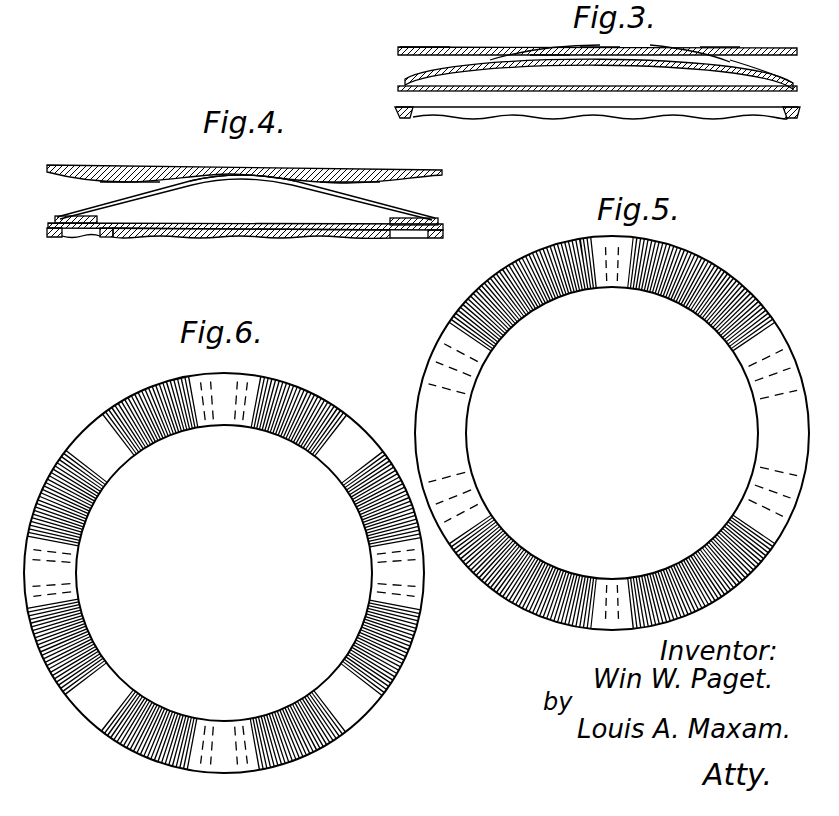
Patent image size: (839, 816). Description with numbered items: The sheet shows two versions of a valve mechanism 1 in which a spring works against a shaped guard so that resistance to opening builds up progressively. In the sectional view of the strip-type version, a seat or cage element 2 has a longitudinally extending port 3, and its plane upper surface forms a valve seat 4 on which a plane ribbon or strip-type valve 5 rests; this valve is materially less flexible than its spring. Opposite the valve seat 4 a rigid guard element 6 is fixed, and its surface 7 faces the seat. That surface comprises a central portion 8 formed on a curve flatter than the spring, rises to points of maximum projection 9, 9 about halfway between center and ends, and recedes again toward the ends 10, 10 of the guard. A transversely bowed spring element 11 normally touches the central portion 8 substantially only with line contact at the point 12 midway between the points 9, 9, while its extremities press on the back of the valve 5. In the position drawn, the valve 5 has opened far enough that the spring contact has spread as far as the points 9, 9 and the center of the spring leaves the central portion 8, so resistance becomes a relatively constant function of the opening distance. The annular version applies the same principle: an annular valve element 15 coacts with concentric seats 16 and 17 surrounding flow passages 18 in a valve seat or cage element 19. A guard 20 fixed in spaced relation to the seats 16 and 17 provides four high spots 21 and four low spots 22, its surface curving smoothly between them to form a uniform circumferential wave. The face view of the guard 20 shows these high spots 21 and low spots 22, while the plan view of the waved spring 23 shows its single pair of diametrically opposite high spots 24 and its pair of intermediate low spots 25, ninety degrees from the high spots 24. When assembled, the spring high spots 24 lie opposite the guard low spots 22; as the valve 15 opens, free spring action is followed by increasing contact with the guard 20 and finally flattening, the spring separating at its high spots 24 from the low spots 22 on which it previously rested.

In FIG. 3, the valve mechanism 1 is at (420, 72).
In FIG. 3, the seat or cage element 2 is at (793, 110).
In FIG. 3, the port 3 is at (563, 112).
In FIG. 3, the valve seat 4 is at (737, 108).
In FIG. 3, the ribbon or strip-type valve 5 is at (528, 88).
In FIG. 3, the guard element 6 is at (713, 50).
In FIG. 3, the guard surface 7 is at (428, 50).
In FIG. 3, the central portion of guard surface 8 is at (547, 53).
In FIG. 3, the points of maximum projection 9 is at (502, 60).
In FIG. 3, the ends of the guard 10 is at (427, 55).
In FIG. 3, the transversely bowed spring element 11 is at (747, 68).
In FIG. 3, the point of line contact 12 is at (600, 53).
In FIG. 4, the annular valve element 15 is at (440, 228).
In FIG. 4, the concentric seat 16 is at (55, 236).
In FIG. 4, the concentric seat 17 is at (108, 235).
In FIG. 4, the flow passages 18 is at (82, 235).
In FIG. 4, the valve seat or cage element 19 is at (320, 232).
In FIG. 4, the guard 20 is at (377, 172).
In FIG. 4, the high spots of the guard 21 is at (127, 182).
In FIG. 6, the high spots of the guard 21 is at (88, 443).
In FIG. 4, the low spots of the guard 22 is at (252, 172).
In FIG. 6, the low spots of the guard 22 is at (240, 398).
In FIG. 4, the waved spring 23 is at (397, 212).
In FIG. 5, the waved spring 23 is at (727, 287).
In FIG. 4, the high spots of the spring 24 is at (249, 176).
In FIG. 5, the high spots of the spring 24 is at (615, 265).
In FIG. 4, the low spots of the spring 25 is at (80, 216).
In FIG. 5, the low spots of the spring 25 is at (447, 430).